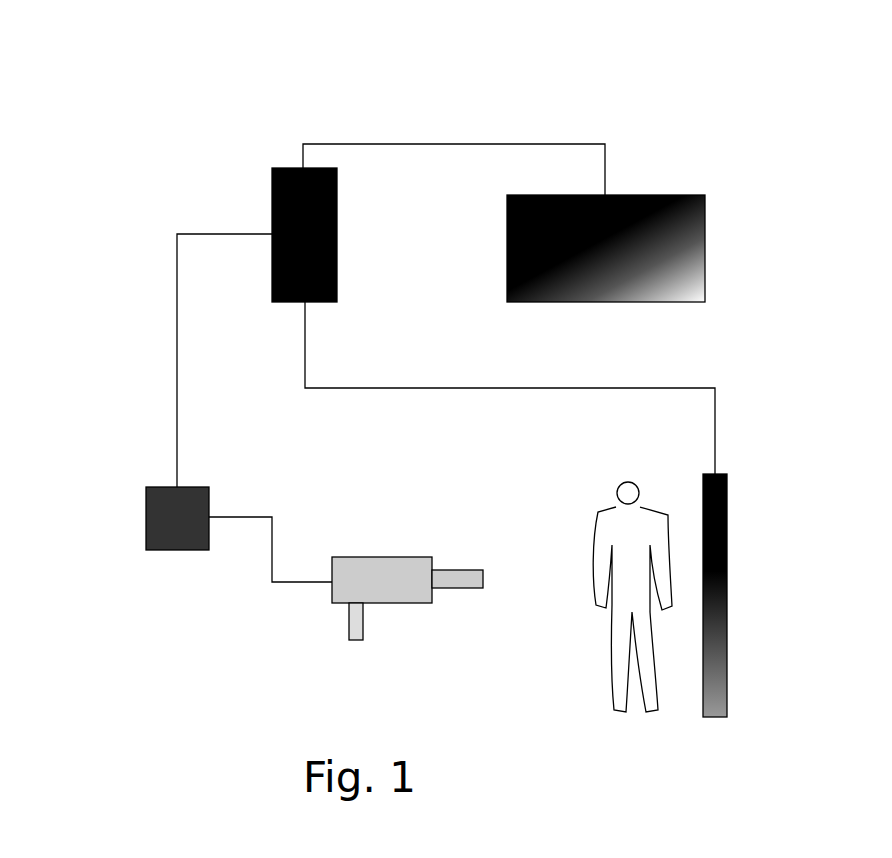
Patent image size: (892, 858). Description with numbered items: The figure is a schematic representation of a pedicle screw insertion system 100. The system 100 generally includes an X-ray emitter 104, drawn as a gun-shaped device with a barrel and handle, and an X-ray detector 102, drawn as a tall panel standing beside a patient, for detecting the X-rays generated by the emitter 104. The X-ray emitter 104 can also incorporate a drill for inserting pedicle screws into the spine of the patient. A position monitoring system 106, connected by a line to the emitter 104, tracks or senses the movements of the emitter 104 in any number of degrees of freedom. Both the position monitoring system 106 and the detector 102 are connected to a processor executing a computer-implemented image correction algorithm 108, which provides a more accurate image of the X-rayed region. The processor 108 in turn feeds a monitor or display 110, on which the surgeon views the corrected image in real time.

The pedicle screw insertion system 100 is at (155, 145).
The X-ray detector 102 is at (727, 590).
The X-ray emitter 104 is at (334, 603).
The position monitoring system 106 is at (146, 521).
The processor executing a computer-implemented image correction algorithm 108 is at (283, 168).
The monitor or display 110 is at (662, 195).